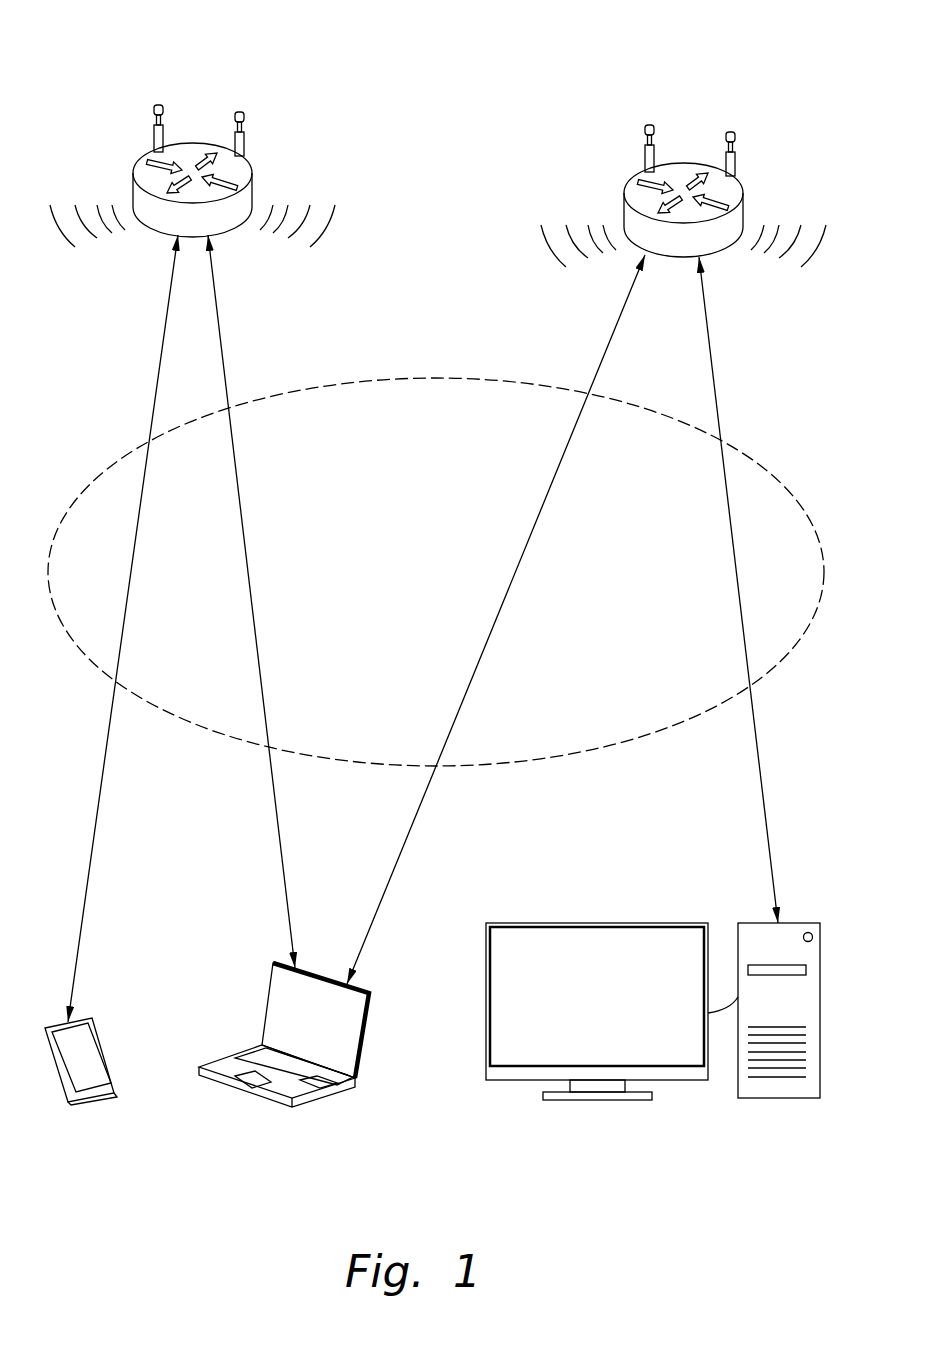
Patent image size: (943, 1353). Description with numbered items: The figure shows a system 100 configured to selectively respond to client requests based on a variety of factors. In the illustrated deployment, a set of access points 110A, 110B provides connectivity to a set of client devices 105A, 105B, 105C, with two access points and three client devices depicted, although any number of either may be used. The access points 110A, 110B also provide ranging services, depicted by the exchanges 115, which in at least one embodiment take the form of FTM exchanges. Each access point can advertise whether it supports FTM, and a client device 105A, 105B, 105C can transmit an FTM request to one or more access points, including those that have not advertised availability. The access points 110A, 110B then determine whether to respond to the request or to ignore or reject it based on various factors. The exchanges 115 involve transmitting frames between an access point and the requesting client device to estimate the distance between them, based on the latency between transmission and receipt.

The system 100 is at (722, 47).
The client device 105A is at (94, 1105).
The client device 105B is at (272, 1104).
The client device 105C is at (780, 1098).
The access point 110A is at (240, 172).
The access point 110B is at (636, 194).
The exchanges 115 is at (440, 378).